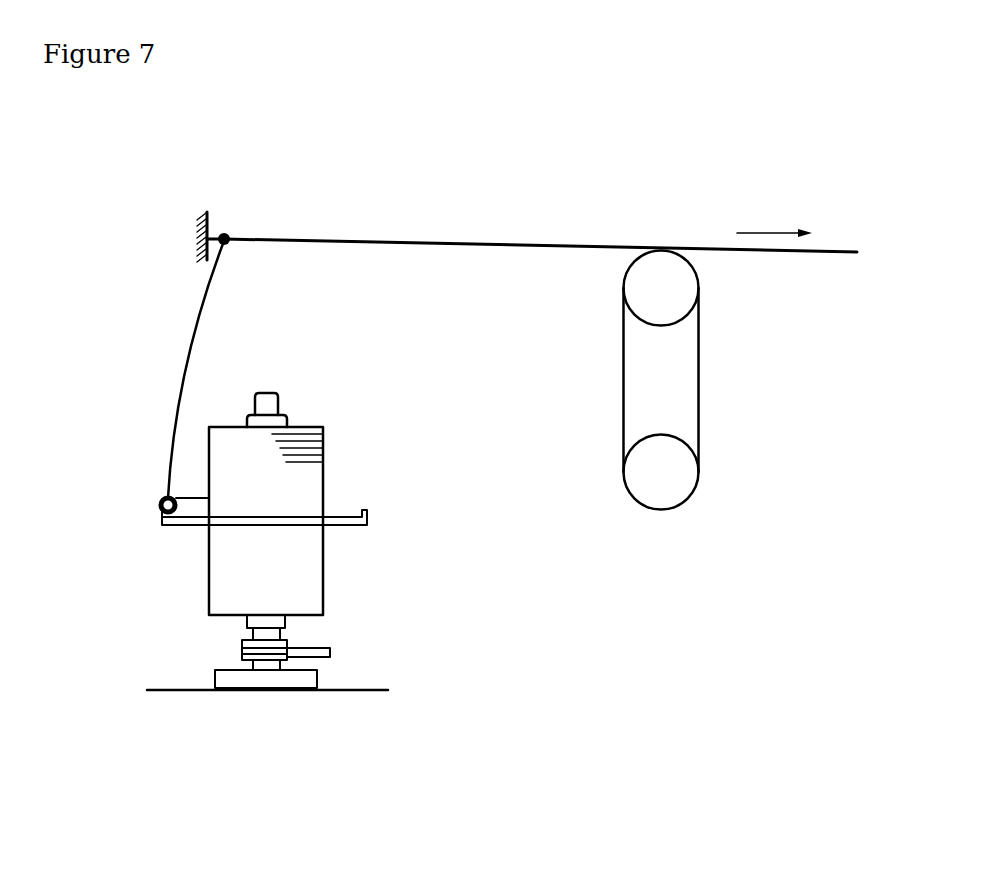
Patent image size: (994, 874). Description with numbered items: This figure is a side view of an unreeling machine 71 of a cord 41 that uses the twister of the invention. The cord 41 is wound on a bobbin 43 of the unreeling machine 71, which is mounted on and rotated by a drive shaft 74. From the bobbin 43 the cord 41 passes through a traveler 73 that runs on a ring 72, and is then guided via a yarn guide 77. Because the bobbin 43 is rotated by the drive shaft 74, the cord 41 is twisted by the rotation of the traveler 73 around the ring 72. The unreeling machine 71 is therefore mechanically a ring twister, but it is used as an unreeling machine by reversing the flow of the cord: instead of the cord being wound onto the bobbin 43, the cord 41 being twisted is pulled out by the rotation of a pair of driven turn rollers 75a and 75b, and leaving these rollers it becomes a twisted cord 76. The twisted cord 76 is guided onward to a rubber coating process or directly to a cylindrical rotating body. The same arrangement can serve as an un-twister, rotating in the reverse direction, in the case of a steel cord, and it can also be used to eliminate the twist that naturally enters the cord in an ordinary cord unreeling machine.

The cord 41 is at (300, 433).
The bobbin 43 is at (209, 578).
The unreeling machine 71 is at (276, 535).
The ring 72 is at (342, 510).
The traveler 73 is at (160, 497).
The drive shaft 74 is at (250, 632).
The driven turn roller 75a is at (630, 268).
The driven turn roller 75b is at (638, 506).
The twisted cord 76 is at (465, 243).
The yarn guide 77 is at (224, 234).